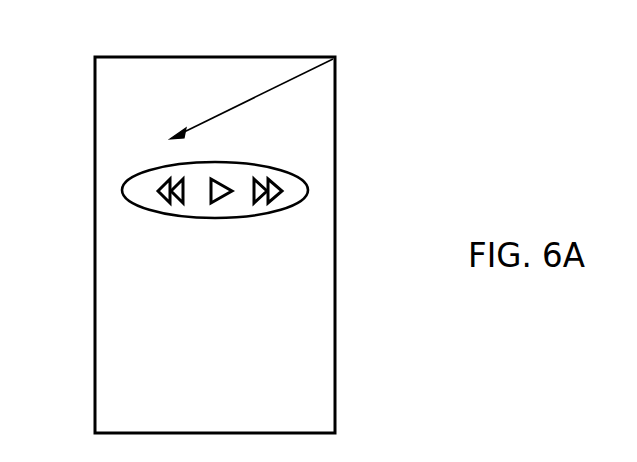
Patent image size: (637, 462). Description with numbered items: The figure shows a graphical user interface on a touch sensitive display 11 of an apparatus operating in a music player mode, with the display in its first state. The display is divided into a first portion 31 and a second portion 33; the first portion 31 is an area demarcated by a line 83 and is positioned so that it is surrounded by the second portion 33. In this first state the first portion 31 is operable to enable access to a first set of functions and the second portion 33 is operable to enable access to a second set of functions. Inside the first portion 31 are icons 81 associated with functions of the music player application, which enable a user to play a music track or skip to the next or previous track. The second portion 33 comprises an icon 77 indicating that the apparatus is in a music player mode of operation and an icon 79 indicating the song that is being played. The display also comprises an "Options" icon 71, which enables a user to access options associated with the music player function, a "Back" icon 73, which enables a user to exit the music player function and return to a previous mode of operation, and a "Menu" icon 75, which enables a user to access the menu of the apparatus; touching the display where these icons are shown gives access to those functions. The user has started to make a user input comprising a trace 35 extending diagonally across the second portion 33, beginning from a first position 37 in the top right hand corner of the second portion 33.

The touch sensitive display 11 is at (335, 183).
The first portion 31 is at (308, 190).
The second portion 33 is at (103, 163).
The trace 35 is at (282, 88).
The first position 37 is at (326, 62).
The "Options" icon 71 is at (100, 404).
The "Back" icon 73 is at (332, 406).
The "Menu" icon 75 is at (103, 74).
The icon 77 is at (103, 120).
The icon 79 is at (285, 268).
The icons 81 is at (183, 201).
The line 83 is at (122, 190).